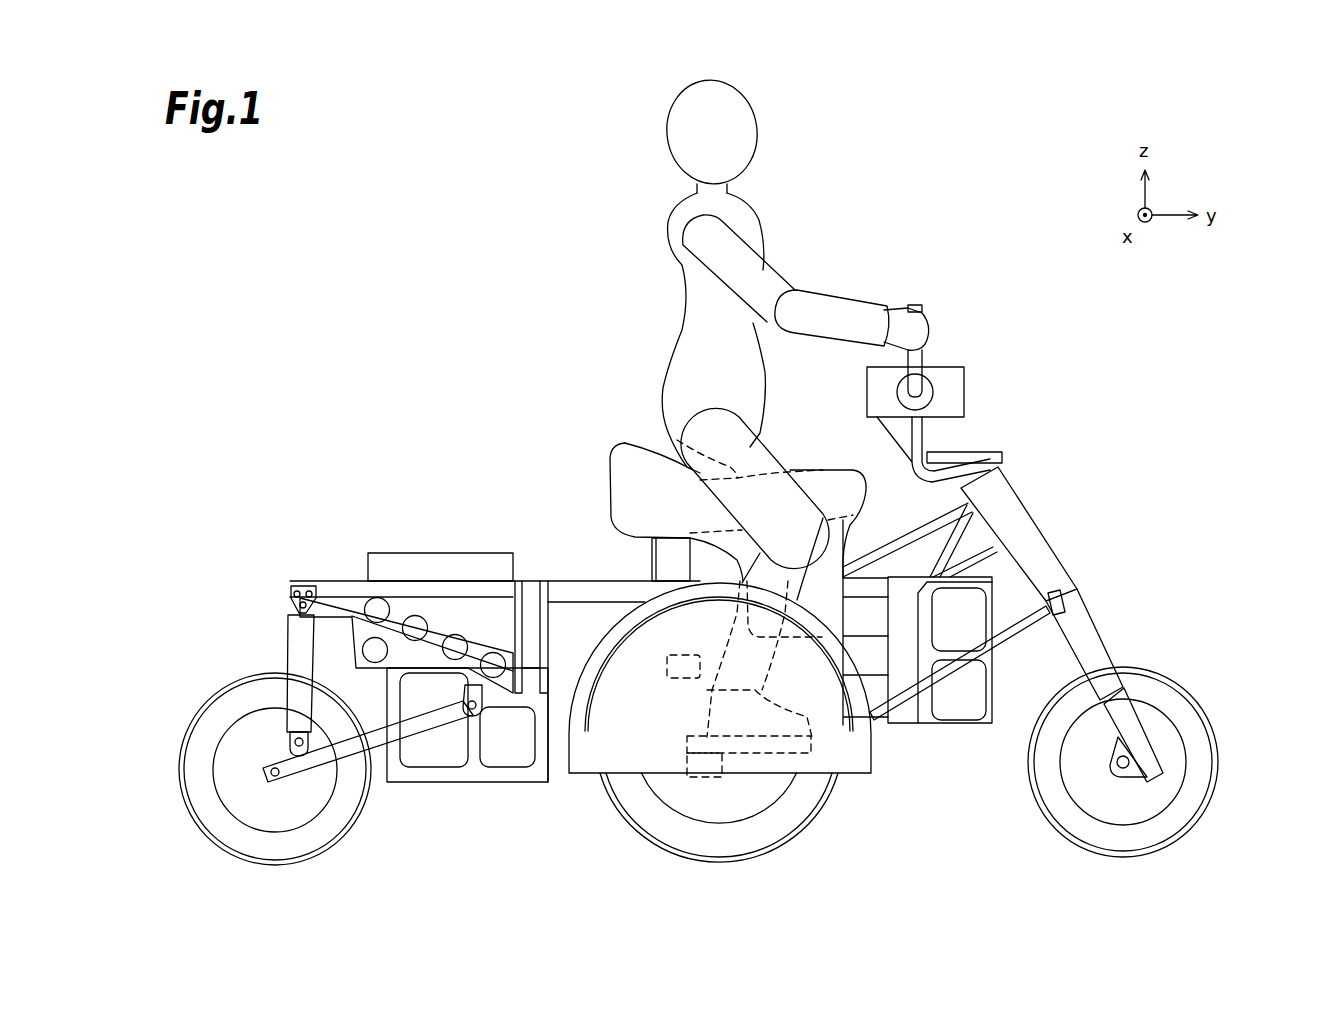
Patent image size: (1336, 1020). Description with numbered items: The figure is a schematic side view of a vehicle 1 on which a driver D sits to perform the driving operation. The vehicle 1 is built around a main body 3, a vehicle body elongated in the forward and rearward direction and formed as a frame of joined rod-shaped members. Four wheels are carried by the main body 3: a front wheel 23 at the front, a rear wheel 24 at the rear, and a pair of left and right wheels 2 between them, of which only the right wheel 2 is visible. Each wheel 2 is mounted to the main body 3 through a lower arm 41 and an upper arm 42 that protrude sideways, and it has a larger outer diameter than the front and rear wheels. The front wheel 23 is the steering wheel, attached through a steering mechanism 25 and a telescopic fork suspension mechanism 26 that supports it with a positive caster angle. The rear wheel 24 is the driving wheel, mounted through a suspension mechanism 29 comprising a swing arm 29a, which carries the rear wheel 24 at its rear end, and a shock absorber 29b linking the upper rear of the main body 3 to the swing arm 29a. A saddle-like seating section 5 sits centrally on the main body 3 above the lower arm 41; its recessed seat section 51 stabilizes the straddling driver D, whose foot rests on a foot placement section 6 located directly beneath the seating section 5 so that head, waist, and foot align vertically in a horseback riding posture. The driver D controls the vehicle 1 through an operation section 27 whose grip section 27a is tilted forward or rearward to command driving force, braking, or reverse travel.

The vehicle 1 is at (513, 333).
The wheel 2 is at (636, 800).
The main body 3 is at (567, 584).
The seating section 5 is at (835, 467).
The foot placement section 6 is at (803, 750).
The front wheel 23 is at (1177, 700).
The rear wheel 24 is at (198, 738).
The steering mechanism 25 is at (1025, 546).
The suspension mechanism 26 is at (1080, 627).
The operation section 27 is at (965, 390).
The grip section 27a is at (922, 310).
The suspension mechanism 29 is at (228, 575).
The swing arm 29a is at (303, 726).
The shock absorber 29b is at (300, 644).
The lower arm 41 is at (712, 762).
The upper arm 42 is at (677, 655).
The seat section 51 is at (677, 440).
The driver D is at (702, 313).